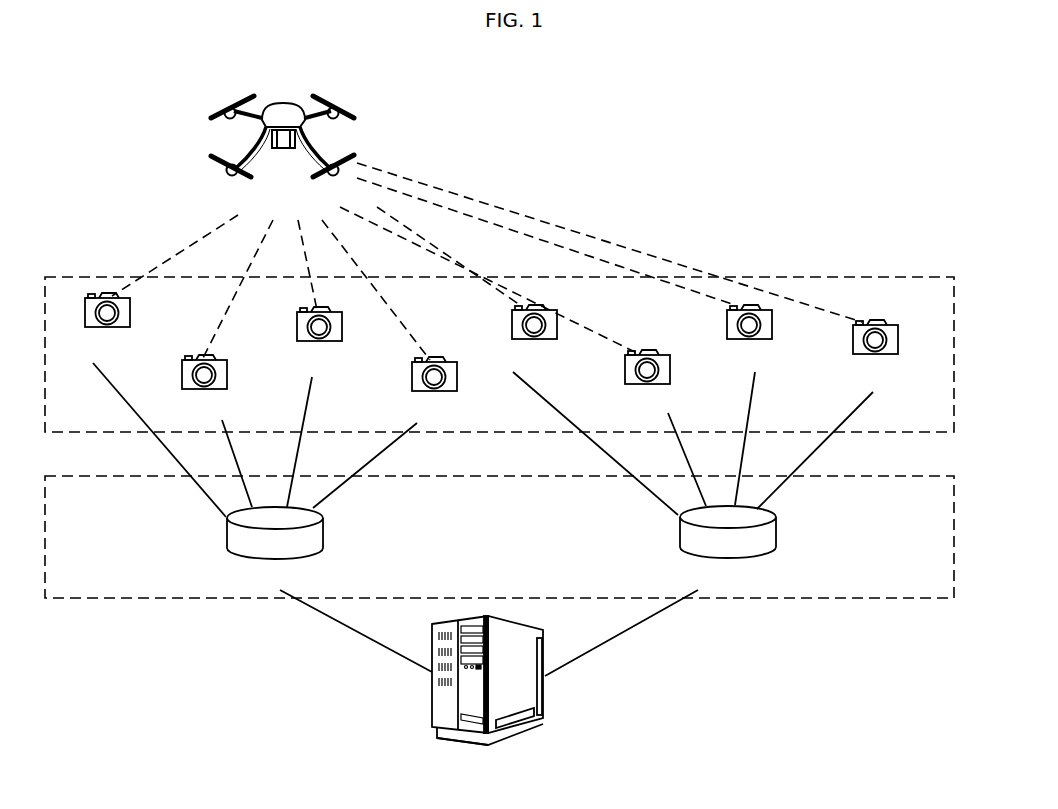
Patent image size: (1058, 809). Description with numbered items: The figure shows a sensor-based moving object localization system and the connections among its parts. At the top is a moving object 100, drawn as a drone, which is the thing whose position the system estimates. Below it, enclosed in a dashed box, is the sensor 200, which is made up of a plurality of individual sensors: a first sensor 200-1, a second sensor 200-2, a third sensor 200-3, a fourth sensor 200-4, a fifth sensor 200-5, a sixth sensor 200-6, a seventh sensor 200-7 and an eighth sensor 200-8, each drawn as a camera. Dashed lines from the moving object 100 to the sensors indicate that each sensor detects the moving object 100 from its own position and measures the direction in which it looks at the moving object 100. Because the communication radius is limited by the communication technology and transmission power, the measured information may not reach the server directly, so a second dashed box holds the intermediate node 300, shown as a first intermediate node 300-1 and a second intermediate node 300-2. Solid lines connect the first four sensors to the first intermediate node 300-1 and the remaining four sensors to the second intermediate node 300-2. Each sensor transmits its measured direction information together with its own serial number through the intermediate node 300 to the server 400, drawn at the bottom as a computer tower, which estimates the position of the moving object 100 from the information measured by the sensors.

The moving object 100 is at (343, 120).
The sensor 200 is at (878, 277).
The first sensor 200-1 is at (100, 297).
The second sensor 200-2 is at (190, 360).
The third sensor 200-3 is at (297, 317).
The fourth sensor 200-4 is at (412, 367).
The fifth sensor 200-5 is at (512, 318).
The sixth sensor 200-6 is at (627, 359).
The seventh sensor 200-7 is at (727, 318).
The eighth sensor 200-8 is at (910, 303).
The intermediate node 300 is at (906, 598).
The first intermediate node 300-1 is at (323, 530).
The second intermediate node 300-2 is at (777, 532).
The server 400 is at (546, 697).